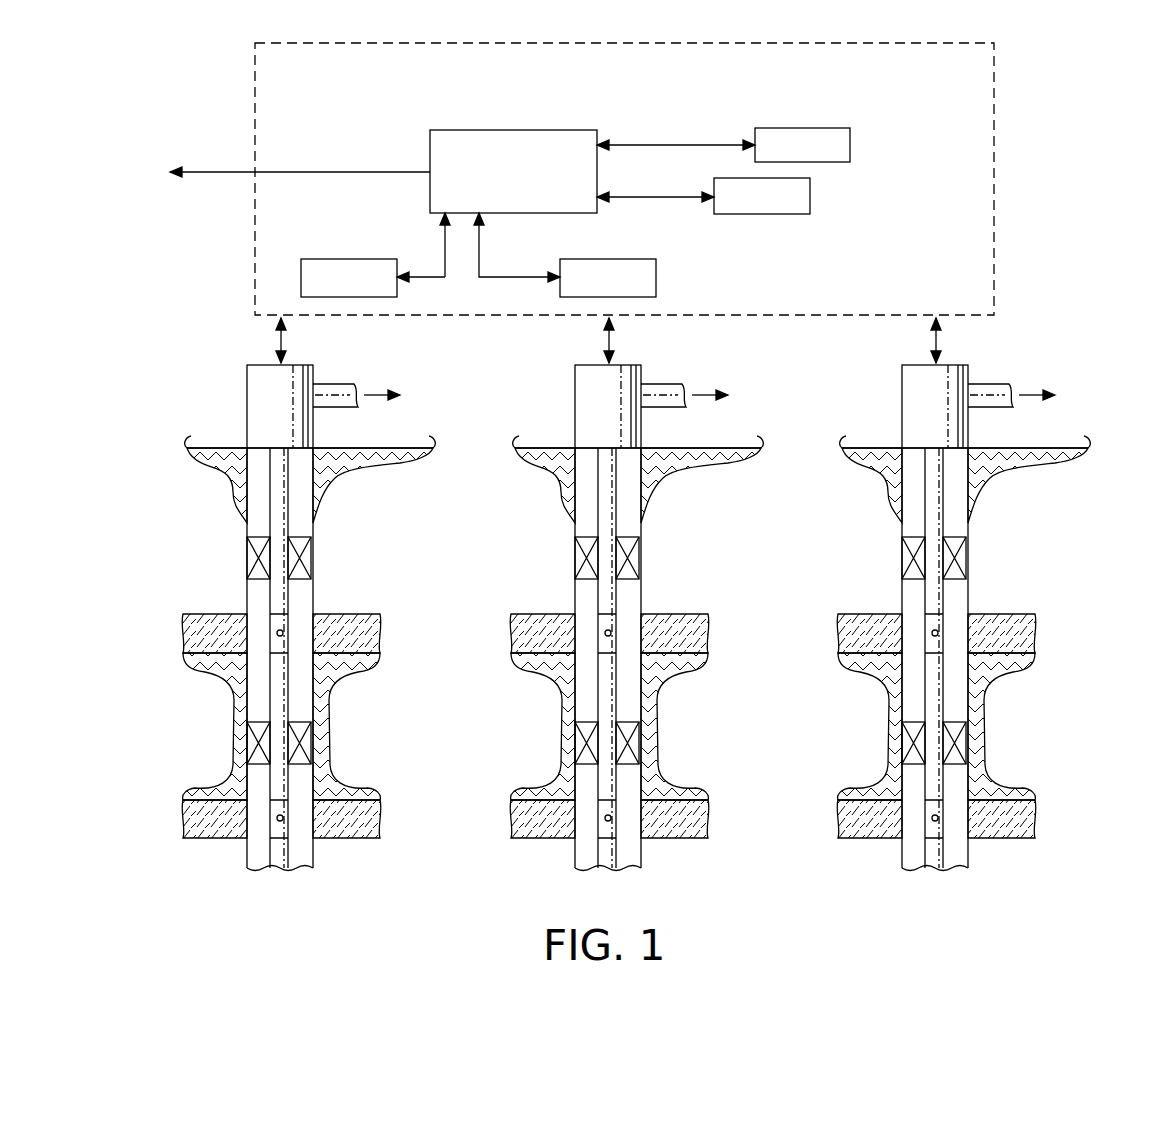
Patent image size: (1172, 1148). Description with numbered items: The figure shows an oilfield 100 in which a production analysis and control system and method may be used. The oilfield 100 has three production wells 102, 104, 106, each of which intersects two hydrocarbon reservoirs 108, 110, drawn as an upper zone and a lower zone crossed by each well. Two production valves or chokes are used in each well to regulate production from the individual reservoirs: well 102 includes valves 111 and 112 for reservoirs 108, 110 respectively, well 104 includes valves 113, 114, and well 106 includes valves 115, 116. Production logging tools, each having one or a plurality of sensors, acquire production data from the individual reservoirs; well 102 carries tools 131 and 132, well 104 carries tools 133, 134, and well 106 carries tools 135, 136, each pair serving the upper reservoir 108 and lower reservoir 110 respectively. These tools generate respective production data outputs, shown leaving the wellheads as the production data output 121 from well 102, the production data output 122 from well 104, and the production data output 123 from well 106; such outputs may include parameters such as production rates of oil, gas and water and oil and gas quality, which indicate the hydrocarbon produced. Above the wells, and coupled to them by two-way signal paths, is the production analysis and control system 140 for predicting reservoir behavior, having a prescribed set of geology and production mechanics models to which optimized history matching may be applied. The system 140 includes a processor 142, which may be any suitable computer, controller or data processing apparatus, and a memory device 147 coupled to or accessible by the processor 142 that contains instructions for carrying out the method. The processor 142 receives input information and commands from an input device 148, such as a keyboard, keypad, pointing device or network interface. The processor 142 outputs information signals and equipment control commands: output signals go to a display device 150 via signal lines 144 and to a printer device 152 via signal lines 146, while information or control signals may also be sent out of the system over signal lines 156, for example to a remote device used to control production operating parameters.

The oilfield 100 is at (835, 893).
The production well 102 is at (222, 398).
The production well 104 is at (608, 606).
The production well 106 is at (935, 606).
The hydrocarbon reservoir 108 is at (343, 614).
The hydrocarbon reservoir 110 is at (347, 800).
The valve 111 is at (290, 620).
The valve 112 is at (288, 813).
The valve 113 is at (665, 585).
The valve 114 is at (673, 853).
The valve 115 is at (992, 585).
The valve 116 is at (1000, 853).
The production data output 121 is at (372, 390).
The production data output 122 is at (699, 372).
The production data output 123 is at (1026, 372).
The production logging tool 131 is at (253, 562).
The production logging tool 132 is at (253, 743).
The production logging tool 133 is at (561, 556).
The production logging tool 134 is at (561, 741).
The production logging tool 135 is at (888, 556).
The production logging tool 136 is at (888, 741).
The production analysis and control system 140 is at (995, 146).
The processor 142 is at (430, 153).
The signal lines 144 is at (675, 145).
The signal lines 146 is at (647, 197).
The memory device 147 is at (330, 259).
The input device 148 is at (656, 277).
The display device 150 is at (850, 147).
The printer device 152 is at (810, 197).
The signal lines 156 is at (220, 172).